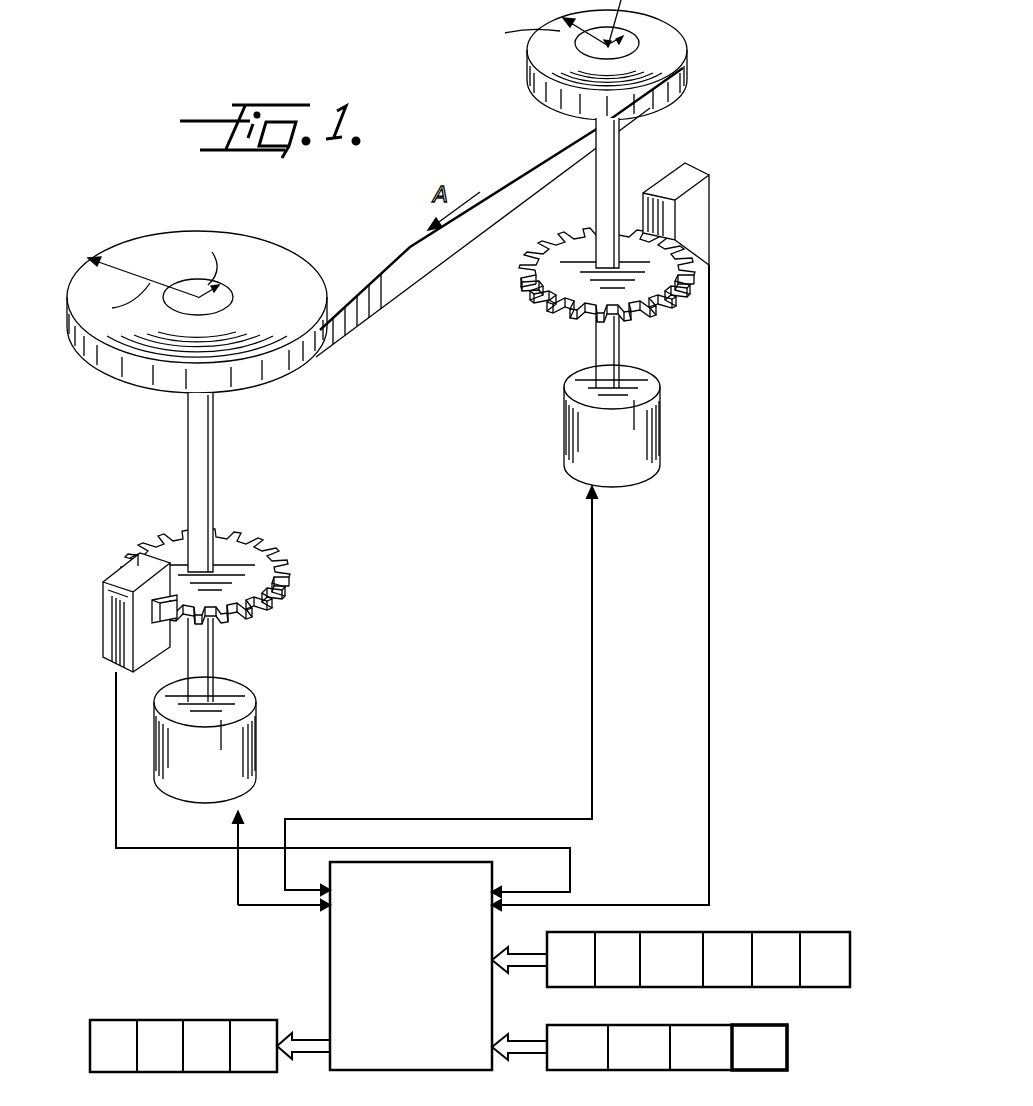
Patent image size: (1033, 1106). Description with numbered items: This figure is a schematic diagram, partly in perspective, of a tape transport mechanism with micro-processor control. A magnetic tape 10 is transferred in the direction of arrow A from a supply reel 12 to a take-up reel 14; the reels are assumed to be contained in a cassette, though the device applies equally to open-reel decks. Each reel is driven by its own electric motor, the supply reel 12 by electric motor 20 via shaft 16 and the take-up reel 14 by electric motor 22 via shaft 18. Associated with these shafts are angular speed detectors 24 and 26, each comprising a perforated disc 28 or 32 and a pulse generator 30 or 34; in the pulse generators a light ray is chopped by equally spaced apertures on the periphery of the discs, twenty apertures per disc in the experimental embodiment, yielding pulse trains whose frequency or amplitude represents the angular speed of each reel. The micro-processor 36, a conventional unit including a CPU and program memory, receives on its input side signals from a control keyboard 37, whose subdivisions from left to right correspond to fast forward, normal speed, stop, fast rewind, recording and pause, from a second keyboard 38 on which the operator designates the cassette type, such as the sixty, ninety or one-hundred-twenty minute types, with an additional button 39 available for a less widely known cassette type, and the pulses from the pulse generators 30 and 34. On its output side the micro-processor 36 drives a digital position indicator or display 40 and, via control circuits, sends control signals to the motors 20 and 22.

The magnetic tape 10 is at (410, 288).
The supply reel 12 is at (670, 35).
The take-up reel 14 is at (268, 250).
The shaft 16 is at (619, 168).
The shaft 18 is at (214, 455).
The electric motor 20 is at (565, 443).
The electric motor 22 is at (256, 727).
The angular speed detector 24 is at (550, 330).
The angular speed detector 26 is at (265, 521).
The perforated disc 28 is at (641, 320).
The pulse generator 30 is at (709, 204).
The perforated disc 32 is at (290, 566).
The pulse generator 34 is at (103, 606).
The micro-processor 36 is at (420, 940).
The control keyboard 37 is at (775, 930).
The second keyboard 38 is at (655, 1061).
The blank cassette key 39 is at (775, 1043).
The display 40 is at (152, 1020).